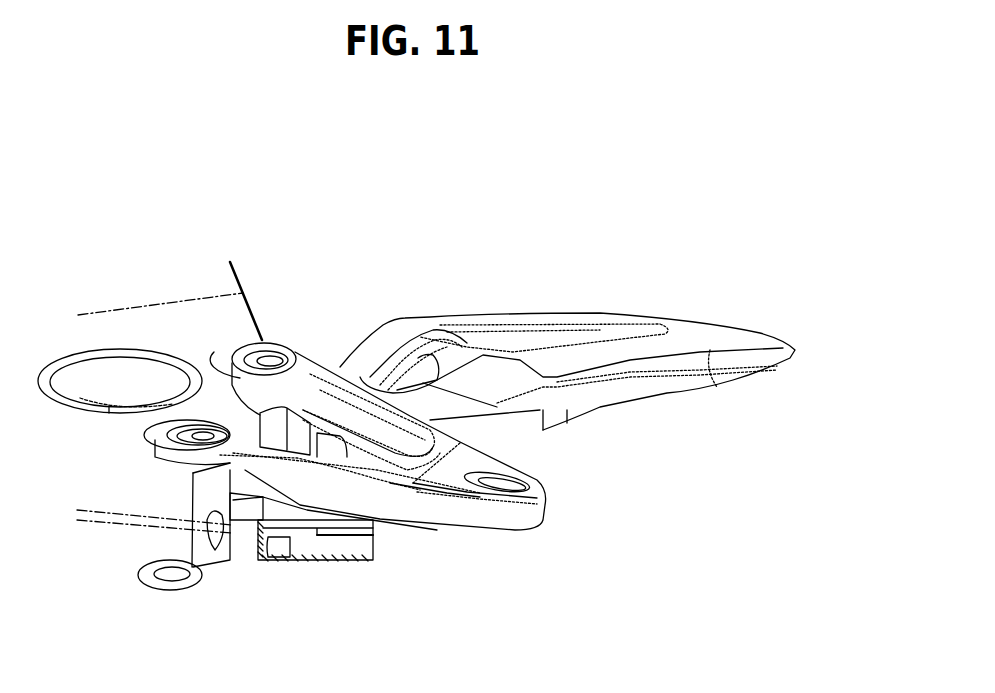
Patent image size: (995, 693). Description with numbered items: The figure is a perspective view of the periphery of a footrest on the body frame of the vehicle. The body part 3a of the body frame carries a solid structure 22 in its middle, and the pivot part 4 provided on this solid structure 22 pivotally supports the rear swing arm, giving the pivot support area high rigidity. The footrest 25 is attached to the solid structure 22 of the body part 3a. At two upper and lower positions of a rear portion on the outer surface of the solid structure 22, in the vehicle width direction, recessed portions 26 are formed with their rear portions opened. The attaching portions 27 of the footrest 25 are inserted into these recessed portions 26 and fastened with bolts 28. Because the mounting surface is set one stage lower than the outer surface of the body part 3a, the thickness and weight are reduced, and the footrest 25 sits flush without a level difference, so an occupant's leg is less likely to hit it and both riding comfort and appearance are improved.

The body part 3a is at (258, 318).
The pivot part 4 is at (108, 402).
The solid structure 22 is at (162, 327).
The footrest 25 is at (593, 315).
The recessed portion 26 is at (223, 345).
The attaching portion 27 is at (307, 390).
The bolt 28 is at (290, 357).